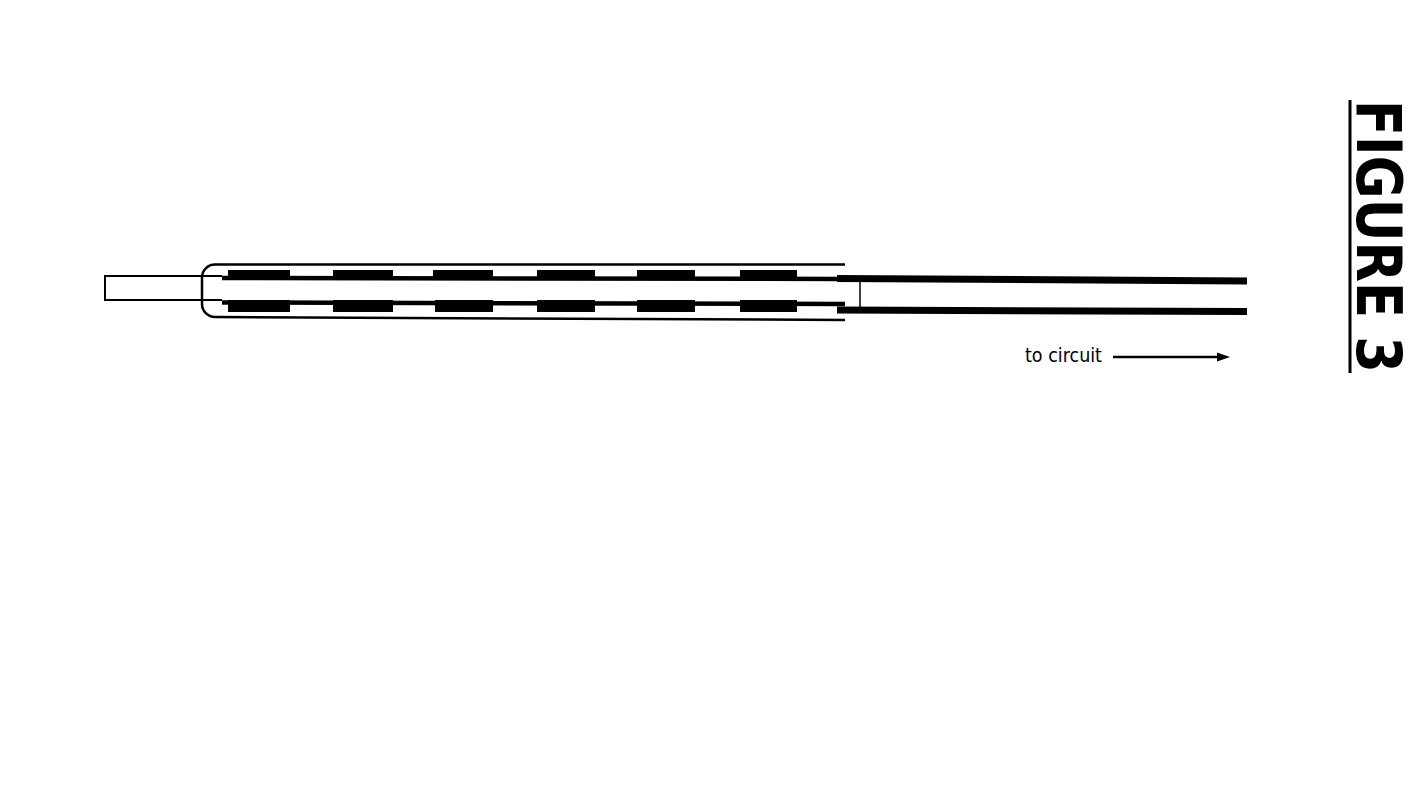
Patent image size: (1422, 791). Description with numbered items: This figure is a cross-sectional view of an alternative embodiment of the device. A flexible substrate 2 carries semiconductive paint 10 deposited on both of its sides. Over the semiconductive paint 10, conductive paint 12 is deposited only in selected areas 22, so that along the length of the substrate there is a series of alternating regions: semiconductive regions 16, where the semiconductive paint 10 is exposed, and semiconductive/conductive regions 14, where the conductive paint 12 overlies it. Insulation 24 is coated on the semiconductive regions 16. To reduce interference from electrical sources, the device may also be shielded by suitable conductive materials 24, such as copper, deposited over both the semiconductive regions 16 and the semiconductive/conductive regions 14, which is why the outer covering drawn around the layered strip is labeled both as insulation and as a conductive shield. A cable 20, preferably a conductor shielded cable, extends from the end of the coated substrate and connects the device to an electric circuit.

The flexible substrate 2 is at (120, 260).
The semiconductive paint 10 is at (327, 257).
The conductive paint 12 is at (264, 252).
The semiconductive/conductive regions 14 is at (458, 313).
The semiconductive regions 16 is at (512, 311).
The cable 20 is at (934, 279).
The selected areas 22 is at (352, 308).
The insulation / shielding conductive materials 24 is at (588, 250).